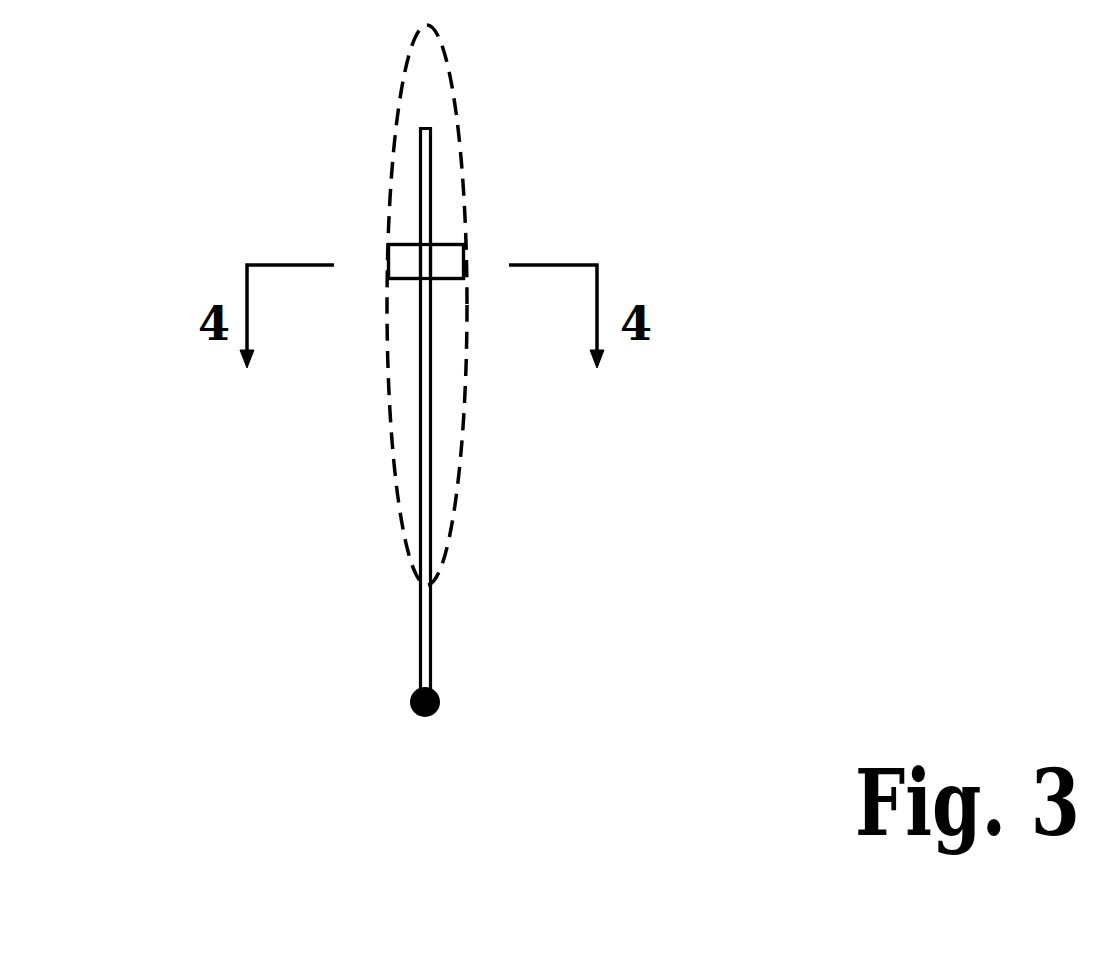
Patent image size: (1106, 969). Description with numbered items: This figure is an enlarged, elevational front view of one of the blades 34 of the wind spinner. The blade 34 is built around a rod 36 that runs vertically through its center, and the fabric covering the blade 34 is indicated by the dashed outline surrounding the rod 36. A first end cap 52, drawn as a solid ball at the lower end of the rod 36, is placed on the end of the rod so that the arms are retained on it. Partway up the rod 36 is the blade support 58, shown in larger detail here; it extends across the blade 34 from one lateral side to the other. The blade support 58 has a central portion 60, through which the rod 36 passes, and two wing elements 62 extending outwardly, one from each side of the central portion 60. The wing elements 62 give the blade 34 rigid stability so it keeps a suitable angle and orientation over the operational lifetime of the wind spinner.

The blade 34 is at (453, 517).
The rod 36 is at (432, 665).
The first end cap 52 is at (417, 690).
The blade support 58 is at (450, 245).
The central portion 60 is at (413, 263).
The wing elements 62 is at (452, 264).